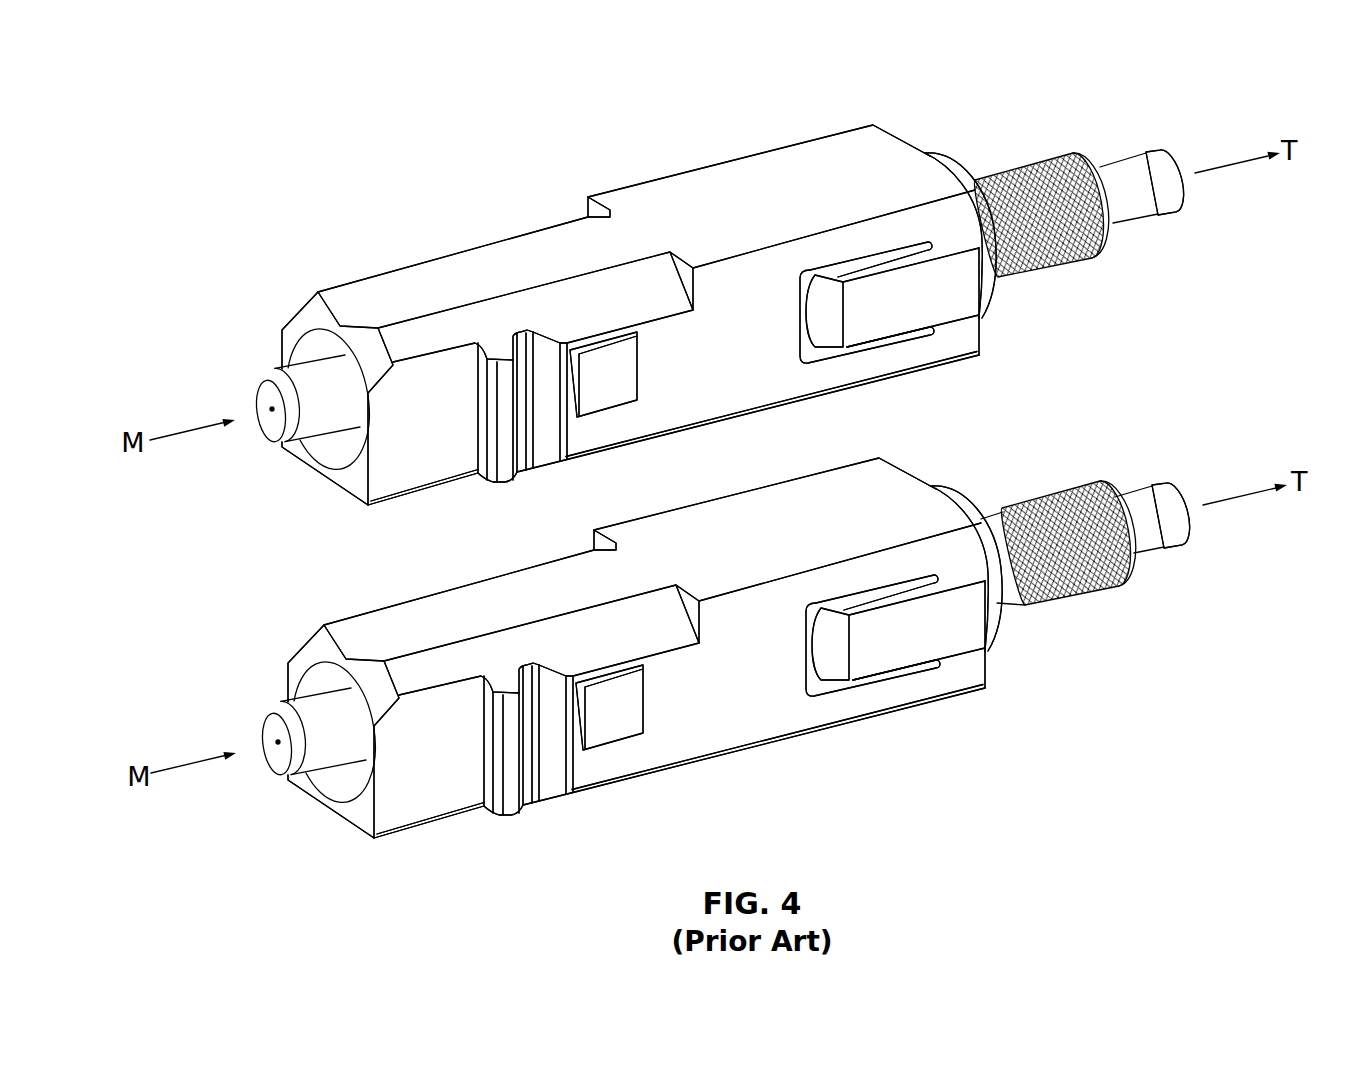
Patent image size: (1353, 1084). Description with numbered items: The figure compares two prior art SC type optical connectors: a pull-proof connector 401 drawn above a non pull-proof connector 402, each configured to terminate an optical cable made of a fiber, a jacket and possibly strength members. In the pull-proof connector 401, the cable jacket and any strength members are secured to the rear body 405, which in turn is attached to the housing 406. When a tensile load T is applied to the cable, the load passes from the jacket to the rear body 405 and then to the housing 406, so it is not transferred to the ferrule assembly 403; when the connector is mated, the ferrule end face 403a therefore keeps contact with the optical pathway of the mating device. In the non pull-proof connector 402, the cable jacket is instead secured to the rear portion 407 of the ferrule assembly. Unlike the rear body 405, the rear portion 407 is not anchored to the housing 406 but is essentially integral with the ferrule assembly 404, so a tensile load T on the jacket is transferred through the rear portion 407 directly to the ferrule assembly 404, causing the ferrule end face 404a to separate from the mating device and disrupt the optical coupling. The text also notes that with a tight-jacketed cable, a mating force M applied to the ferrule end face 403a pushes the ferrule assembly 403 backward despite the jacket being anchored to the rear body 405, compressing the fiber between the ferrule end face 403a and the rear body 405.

The pull-proof connector 401 is at (670, 300).
The non pull-proof connector 402 is at (675, 648).
The ferrule assembly 403 is at (305, 373).
The ferrule end face 403a is at (266, 394).
The ferrule assembly 404 is at (316, 699).
The ferrule end face 404a is at (274, 728).
The rear body 405 is at (1022, 163).
The housing 406 is at (797, 160).
The rear portion 407 is at (1067, 589).